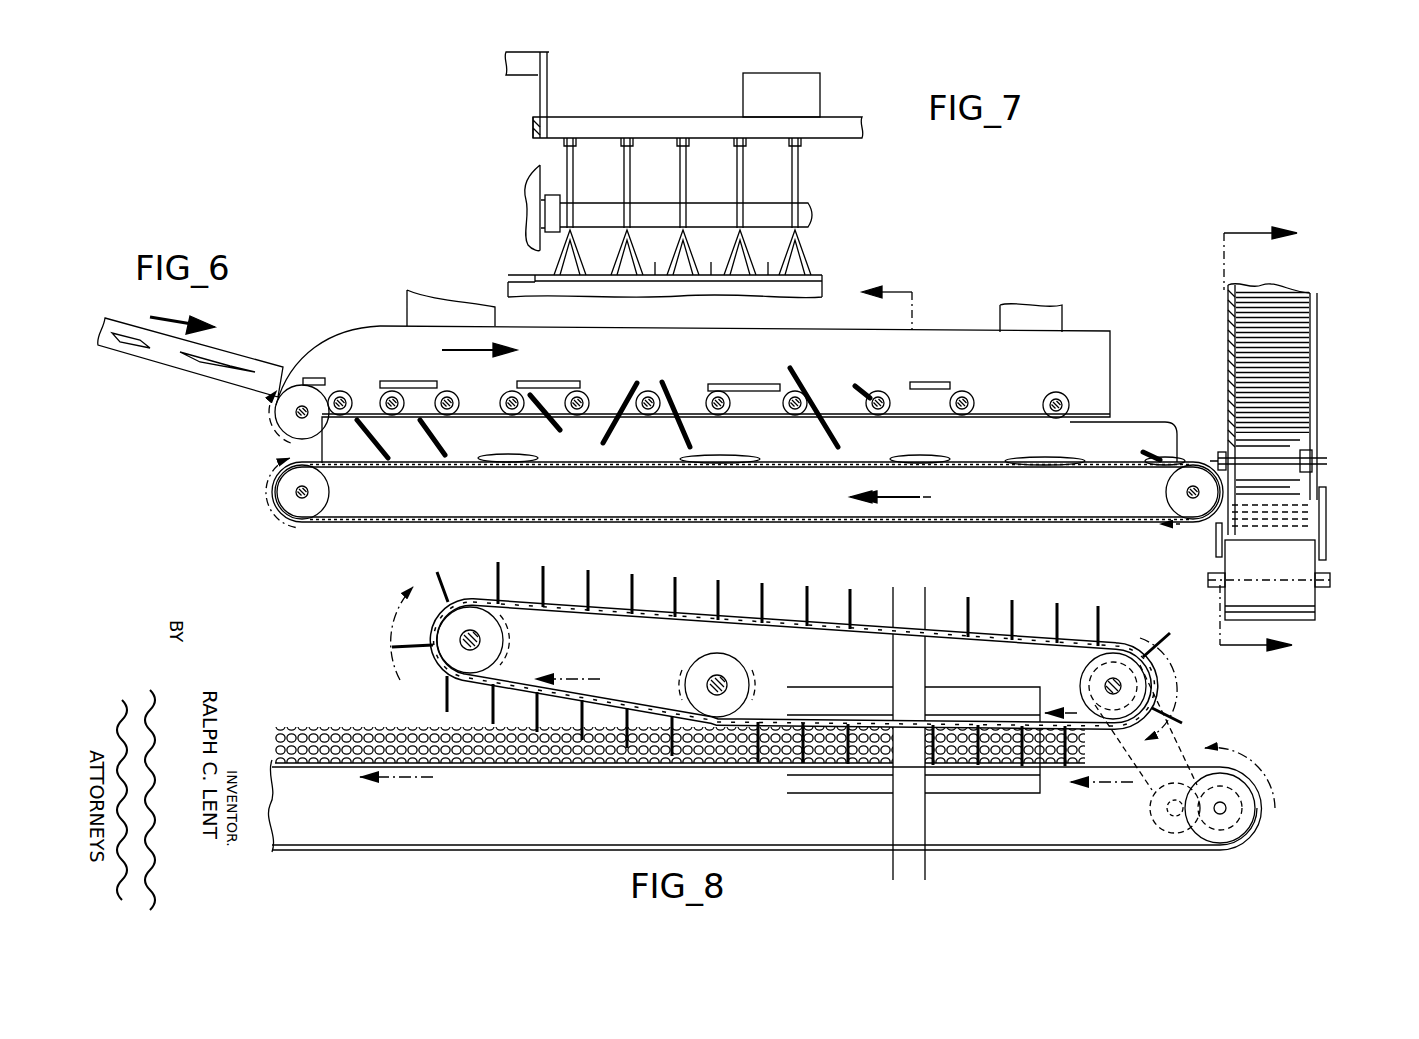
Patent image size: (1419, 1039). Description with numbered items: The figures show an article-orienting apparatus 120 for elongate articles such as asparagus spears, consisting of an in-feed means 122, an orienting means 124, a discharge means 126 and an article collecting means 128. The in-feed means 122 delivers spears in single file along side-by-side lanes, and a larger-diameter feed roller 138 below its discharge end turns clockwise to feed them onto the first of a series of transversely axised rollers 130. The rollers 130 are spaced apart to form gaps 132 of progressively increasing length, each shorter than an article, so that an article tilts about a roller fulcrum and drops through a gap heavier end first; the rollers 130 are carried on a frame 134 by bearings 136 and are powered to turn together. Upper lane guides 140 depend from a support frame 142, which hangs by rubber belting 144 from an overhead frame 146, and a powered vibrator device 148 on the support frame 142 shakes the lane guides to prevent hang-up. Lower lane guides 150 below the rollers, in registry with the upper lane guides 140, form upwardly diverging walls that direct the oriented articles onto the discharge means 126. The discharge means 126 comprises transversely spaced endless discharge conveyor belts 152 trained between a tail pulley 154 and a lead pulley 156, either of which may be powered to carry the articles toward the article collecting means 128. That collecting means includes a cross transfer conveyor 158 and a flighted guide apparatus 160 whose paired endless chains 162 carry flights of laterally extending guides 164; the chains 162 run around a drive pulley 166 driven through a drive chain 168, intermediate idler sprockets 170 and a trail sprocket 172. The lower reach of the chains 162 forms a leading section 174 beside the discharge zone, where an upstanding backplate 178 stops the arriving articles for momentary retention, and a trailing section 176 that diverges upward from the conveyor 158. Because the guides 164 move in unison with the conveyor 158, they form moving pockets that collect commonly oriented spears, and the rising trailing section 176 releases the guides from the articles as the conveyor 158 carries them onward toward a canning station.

In FIG. 6, the apparatus 120 is at (256, 459).
In FIG. 6, the in-feed means 122 is at (283, 328).
In FIG. 6, the orienting means 124 is at (376, 318).
In FIG. 8, the orienting means 124 is at (853, 686).
In FIG. 6, the discharge means 126 is at (1078, 534).
In FIG. 6, the article collecting means 128 is at (1330, 493).
In FIG. 8, the article collecting means 128 is at (1202, 707).
In FIG. 7, the rollers 130 is at (812, 205).
In FIG. 6, the rollers 130 is at (343, 387).
In FIG. 6, the gaps 132 is at (375, 383).
In FIG. 7, the frame 134 is at (525, 185).
In FIG. 7, the bearings 136 is at (548, 211).
In FIG. 6, the feed roller 138 is at (290, 418).
In FIG. 7, the upper lane guides 140 is at (682, 193).
In FIG. 6, the upper lane guides 140 is at (634, 333).
In FIG. 7, the support frame 142 is at (608, 122).
In FIG. 7, the rubber belting 144 is at (548, 108).
In FIG. 7, the overhead frame 146 is at (522, 70).
In FIG. 7, the powered vibrator device 148 is at (820, 102).
In FIG. 7, the lower lane guides 150 is at (648, 268).
In FIG. 6, the lower lane guides 150 is at (565, 445).
In FIG. 7, the discharge conveyor belts 152 is at (768, 272).
In FIG. 6, the discharge conveyor belts 152 is at (814, 462).
In FIG. 6, the tail pulley 154 is at (302, 508).
In FIG. 6, the lead pulley 156 is at (1188, 512).
In FIG. 6, the cross transfer conveyor 158 is at (1306, 592).
In FIG. 8, the cross transfer conveyor 158 is at (1222, 736).
In FIG. 6, the flighted guide apparatus 160 is at (1206, 306).
In FIG. 8, the flighted guide apparatus 160 is at (708, 592).
In FIG. 8, the endless chains 162 is at (520, 614).
In FIG. 6, the guides 164 is at (1226, 407).
In FIG. 8, the guides 164 is at (437, 575).
In FIG. 8, the drive pulley 166 is at (1140, 678).
In FIG. 8, the drive chain 168 is at (1137, 792).
In FIG. 8, the intermediate idler sprockets 170 is at (693, 652).
In FIG. 8, the trail sprocket 172 is at (470, 605).
In FIG. 8, the leading section 174 is at (962, 720).
In FIG. 8, the trailing section 176 is at (623, 700).
In FIG. 6, the backplate 178 is at (1310, 512).
In FIG. 8, the backplate 178 is at (797, 715).